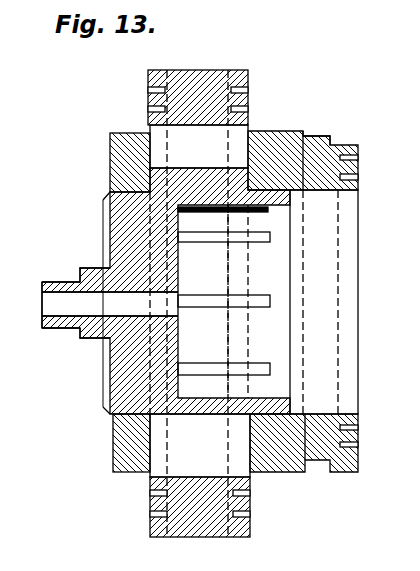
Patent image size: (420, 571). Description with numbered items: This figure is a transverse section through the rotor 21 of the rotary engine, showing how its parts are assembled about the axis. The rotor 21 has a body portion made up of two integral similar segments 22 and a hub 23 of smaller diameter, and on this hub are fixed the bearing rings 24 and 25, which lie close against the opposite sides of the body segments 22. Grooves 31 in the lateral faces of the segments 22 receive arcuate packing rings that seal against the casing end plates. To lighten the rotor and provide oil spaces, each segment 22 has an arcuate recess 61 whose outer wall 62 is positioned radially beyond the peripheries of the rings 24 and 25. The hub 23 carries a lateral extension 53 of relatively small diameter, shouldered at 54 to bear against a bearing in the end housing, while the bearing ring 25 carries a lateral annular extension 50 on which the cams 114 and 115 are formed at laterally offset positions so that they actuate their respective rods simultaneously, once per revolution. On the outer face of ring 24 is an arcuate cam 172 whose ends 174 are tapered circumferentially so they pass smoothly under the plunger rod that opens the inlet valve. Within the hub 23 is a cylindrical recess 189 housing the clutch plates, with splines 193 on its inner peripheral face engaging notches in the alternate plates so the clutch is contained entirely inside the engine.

The rotor 21 is at (108, 130).
The body segments 22 is at (210, 78).
The hub 23 is at (340, 201).
The bearing ring 24 is at (110, 160).
The bearing ring 25 is at (303, 148).
The grooves 31 is at (148, 108).
The lateral annular extension 50 is at (350, 155).
The lateral extension 53 is at (100, 338).
The shoulder 54 is at (82, 276).
The arcuate recess 61 is at (182, 159).
The outer walls 62 is at (218, 303).
The cam 114 is at (328, 136).
The cam 115 is at (342, 472).
The arcuate cam 172 is at (103, 238).
The cam ends 174 is at (107, 193).
The cylindrical recess 189 is at (279, 280).
The splines 193 is at (216, 213).